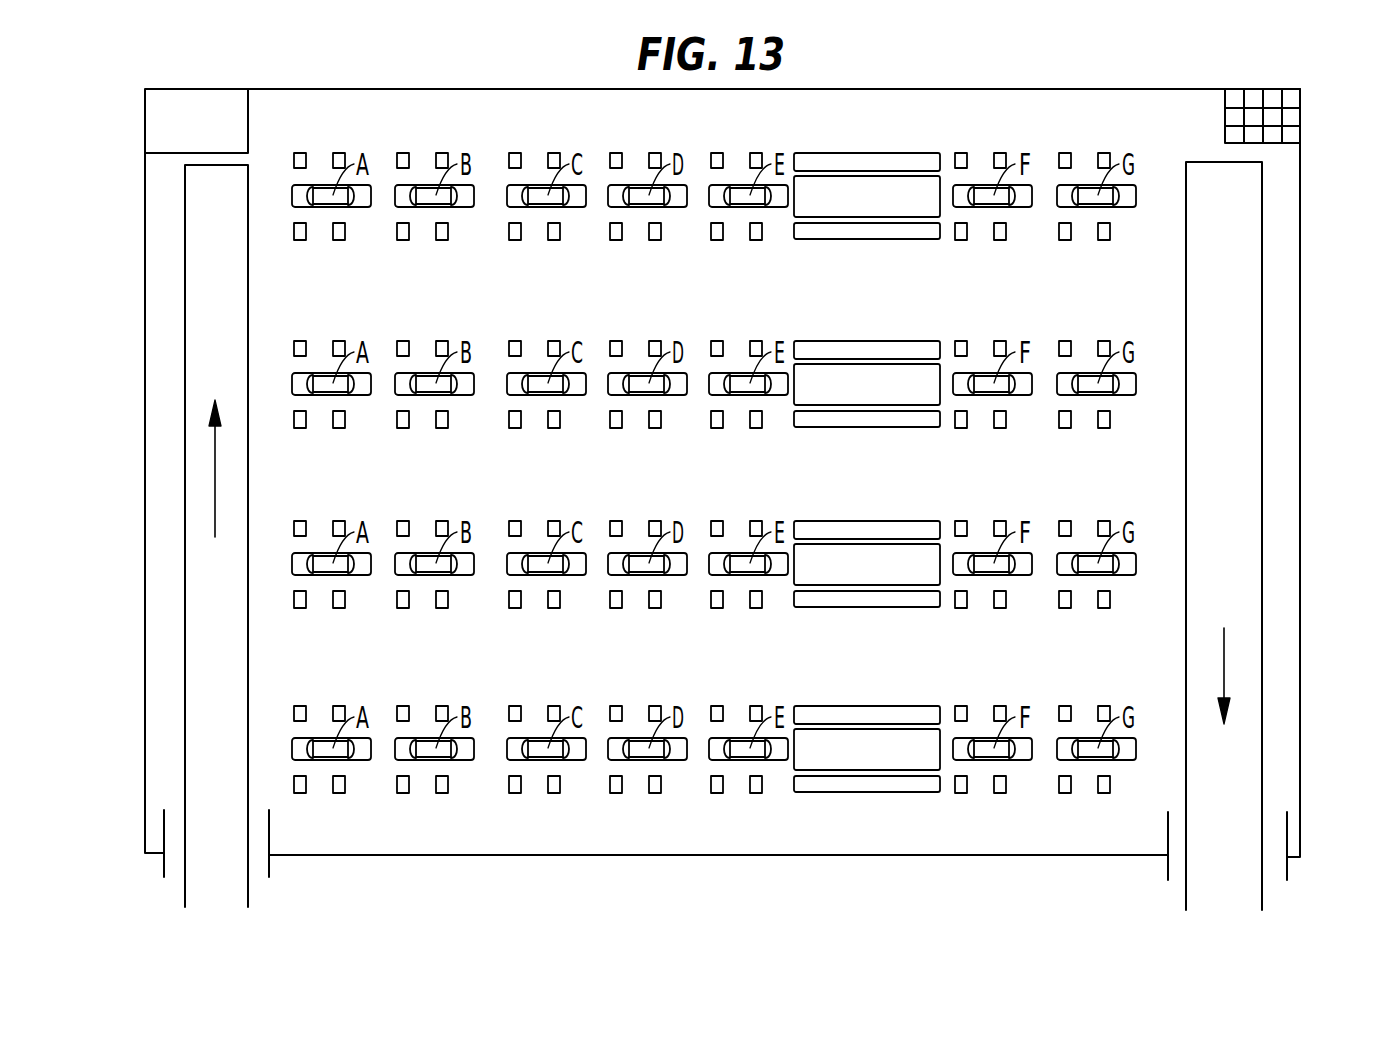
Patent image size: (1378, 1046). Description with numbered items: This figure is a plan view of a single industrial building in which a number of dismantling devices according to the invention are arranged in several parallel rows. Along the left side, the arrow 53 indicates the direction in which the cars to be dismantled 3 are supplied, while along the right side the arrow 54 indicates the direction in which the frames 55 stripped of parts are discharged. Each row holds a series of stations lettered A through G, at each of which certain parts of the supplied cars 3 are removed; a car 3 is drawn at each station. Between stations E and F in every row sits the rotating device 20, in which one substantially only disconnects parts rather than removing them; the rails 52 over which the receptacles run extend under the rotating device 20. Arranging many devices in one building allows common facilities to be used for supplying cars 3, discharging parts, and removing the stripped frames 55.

The car 3 is at (293, 194).
The rotating device 20 is at (908, 160).
The rails 52 is at (740, 857).
The arrow 53 is at (215, 470).
The arrow 54 is at (1224, 672).
The frame stripped of parts 55 is at (1140, 385).